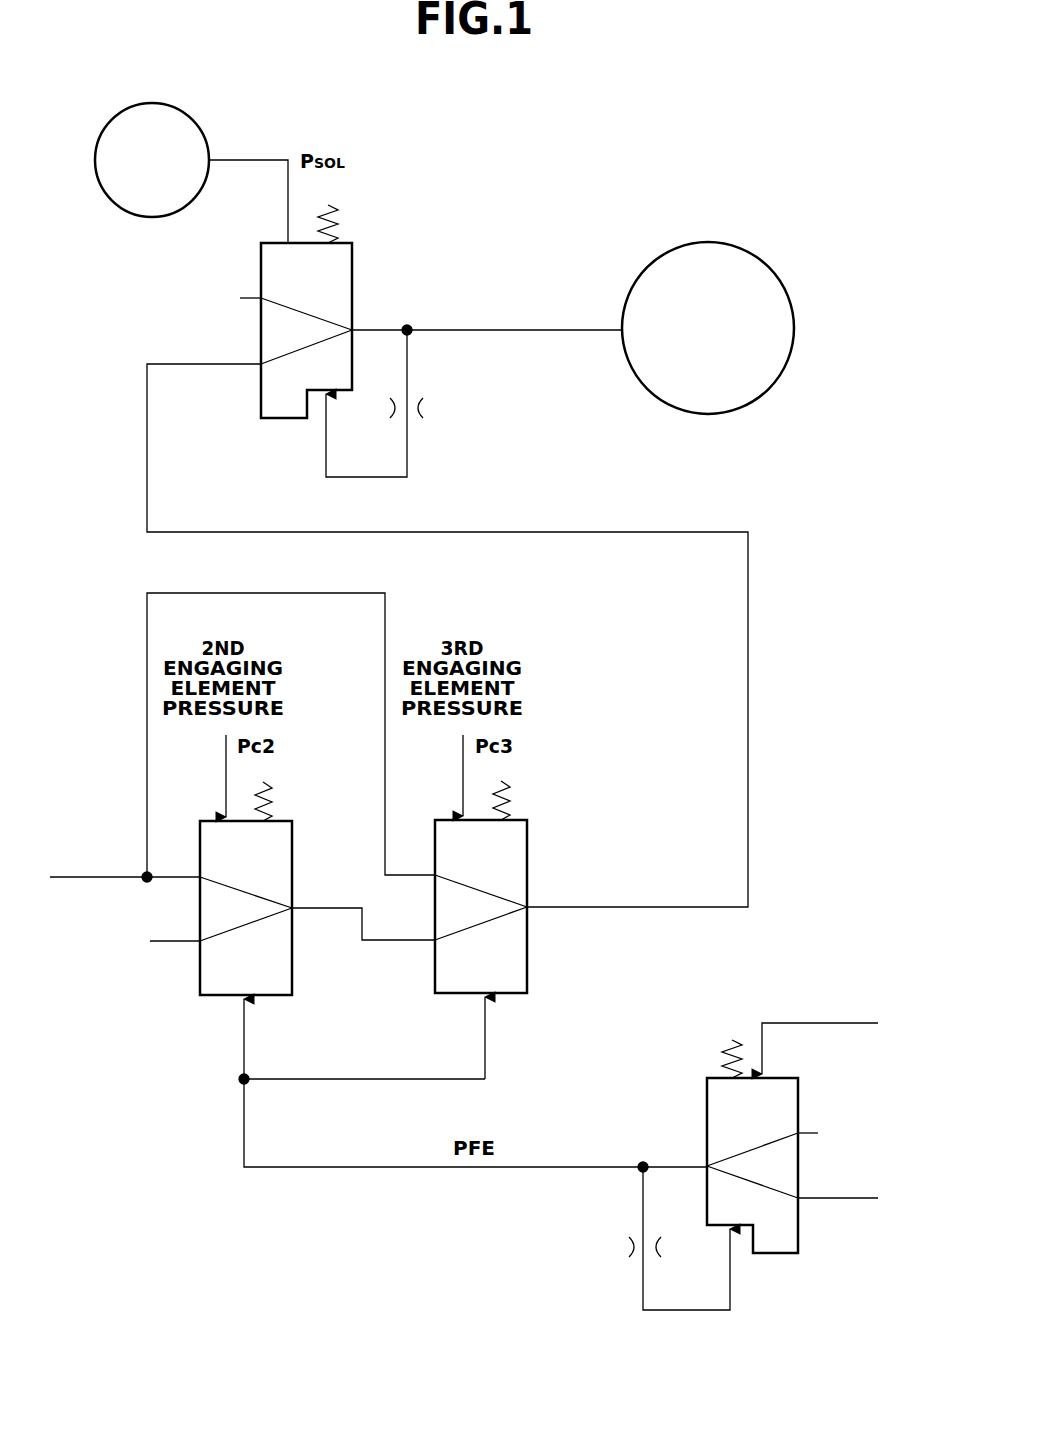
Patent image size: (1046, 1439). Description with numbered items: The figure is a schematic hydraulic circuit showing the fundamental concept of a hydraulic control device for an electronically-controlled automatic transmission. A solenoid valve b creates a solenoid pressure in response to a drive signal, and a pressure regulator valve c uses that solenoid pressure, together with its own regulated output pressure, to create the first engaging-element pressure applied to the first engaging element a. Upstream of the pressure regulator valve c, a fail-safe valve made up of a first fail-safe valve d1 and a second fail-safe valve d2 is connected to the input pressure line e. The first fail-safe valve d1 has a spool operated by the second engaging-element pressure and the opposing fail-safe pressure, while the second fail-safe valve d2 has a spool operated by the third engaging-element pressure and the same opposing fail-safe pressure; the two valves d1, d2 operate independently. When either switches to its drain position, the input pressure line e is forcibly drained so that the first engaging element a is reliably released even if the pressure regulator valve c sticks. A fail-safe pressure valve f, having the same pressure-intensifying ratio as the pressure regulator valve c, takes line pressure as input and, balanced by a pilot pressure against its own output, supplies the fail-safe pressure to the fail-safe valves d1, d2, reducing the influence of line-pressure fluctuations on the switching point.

The first engaging element a is at (700, 242).
The solenoid valve b is at (182, 111).
The pressure regulator valve c is at (353, 256).
The first fail-safe valve d1 is at (200, 997).
The second fail-safe valve d2 is at (528, 937).
The input pressure line e is at (635, 532).
The fail-safe pressure valve f is at (706, 1078).